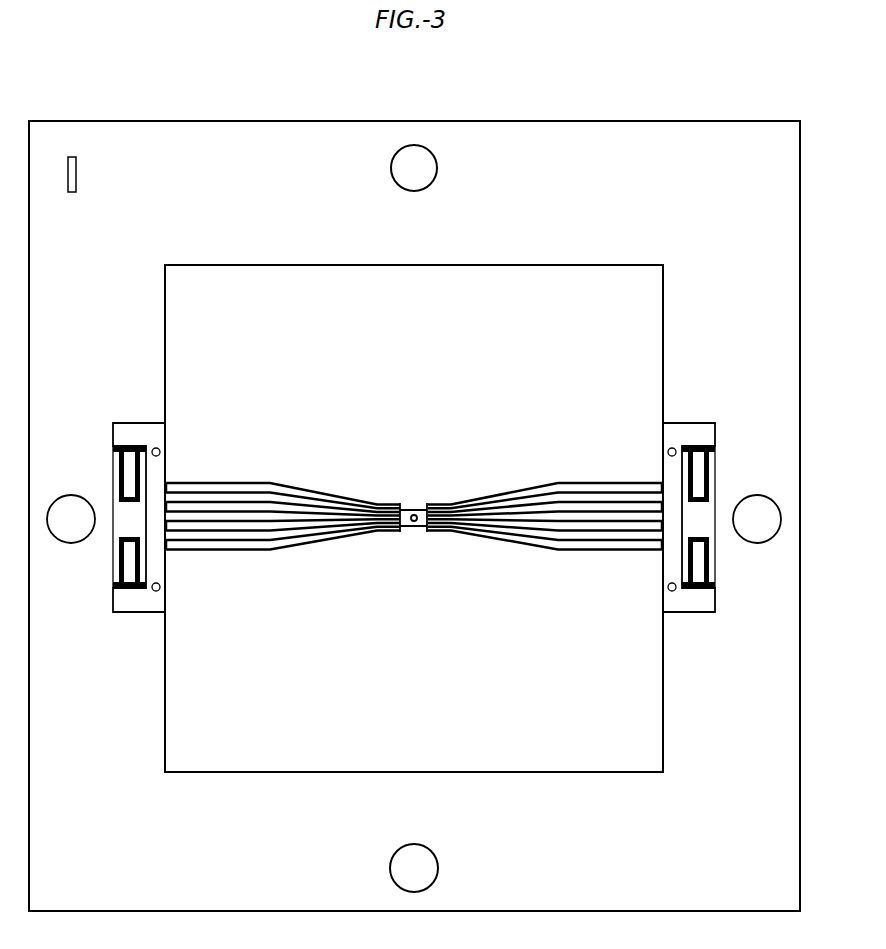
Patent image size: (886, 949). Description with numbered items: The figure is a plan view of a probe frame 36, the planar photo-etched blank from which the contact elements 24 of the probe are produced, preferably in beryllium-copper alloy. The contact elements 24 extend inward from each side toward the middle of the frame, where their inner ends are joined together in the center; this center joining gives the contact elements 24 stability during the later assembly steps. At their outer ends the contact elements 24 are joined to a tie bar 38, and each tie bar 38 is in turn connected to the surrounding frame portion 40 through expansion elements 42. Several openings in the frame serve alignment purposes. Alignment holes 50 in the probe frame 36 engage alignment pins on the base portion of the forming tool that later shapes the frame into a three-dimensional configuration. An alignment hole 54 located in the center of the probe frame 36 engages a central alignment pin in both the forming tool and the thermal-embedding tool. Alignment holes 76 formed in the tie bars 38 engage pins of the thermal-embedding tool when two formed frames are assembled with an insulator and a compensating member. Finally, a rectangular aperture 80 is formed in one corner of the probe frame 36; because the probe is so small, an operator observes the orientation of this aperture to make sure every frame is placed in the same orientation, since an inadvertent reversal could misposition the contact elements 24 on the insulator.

The probe frame 36 is at (267, 121).
The rectangular aperture 80 is at (77, 176).
The frame portion 40 is at (297, 266).
The alignment holes 50 is at (61, 501).
The tie bar 38 is at (167, 482).
The expansion elements 42 is at (118, 471).
The alignment holes 76 is at (160, 589).
The contact elements 24 is at (277, 520).
The alignment hole 54 is at (416, 521).